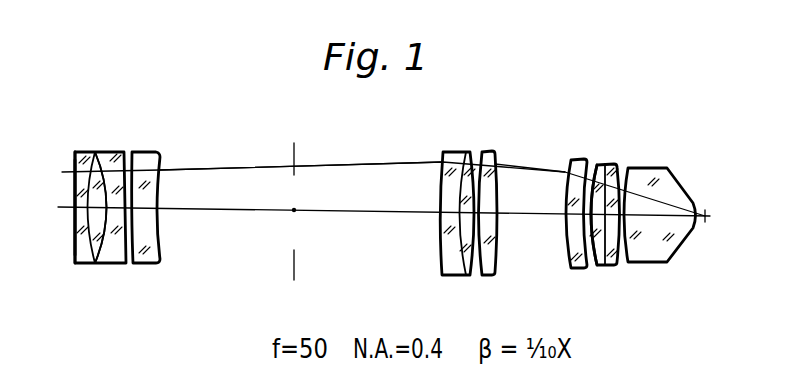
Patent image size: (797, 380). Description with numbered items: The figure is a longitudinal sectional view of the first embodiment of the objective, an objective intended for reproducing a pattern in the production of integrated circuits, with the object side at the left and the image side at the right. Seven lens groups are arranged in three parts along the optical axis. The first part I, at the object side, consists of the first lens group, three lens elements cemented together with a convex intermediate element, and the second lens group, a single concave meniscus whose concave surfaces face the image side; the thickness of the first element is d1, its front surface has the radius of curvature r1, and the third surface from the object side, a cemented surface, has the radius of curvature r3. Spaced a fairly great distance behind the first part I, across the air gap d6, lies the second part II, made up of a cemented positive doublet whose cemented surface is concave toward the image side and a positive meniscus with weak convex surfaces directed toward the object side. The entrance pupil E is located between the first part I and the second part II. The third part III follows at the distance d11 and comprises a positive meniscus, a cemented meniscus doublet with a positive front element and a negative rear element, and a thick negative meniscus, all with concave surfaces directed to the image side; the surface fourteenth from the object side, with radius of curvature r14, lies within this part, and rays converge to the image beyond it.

The first part of the objective I is at (165, 142).
The second part of the objective II is at (510, 142).
The third part of the objective III is at (675, 146).
The thickness of the first lens element d1 is at (72, 222).
The radius of curvature of the first surface r1 is at (78, 257).
The radius of curvature of the third surface r3 is at (101, 262).
The entrance pupil E is at (299, 211).
The air gap between the first and second parts d6 is at (345, 215).
The distance between the second and third parts d11 is at (528, 215).
The radius of curvature of the fourteenth surface r14 is at (596, 265).